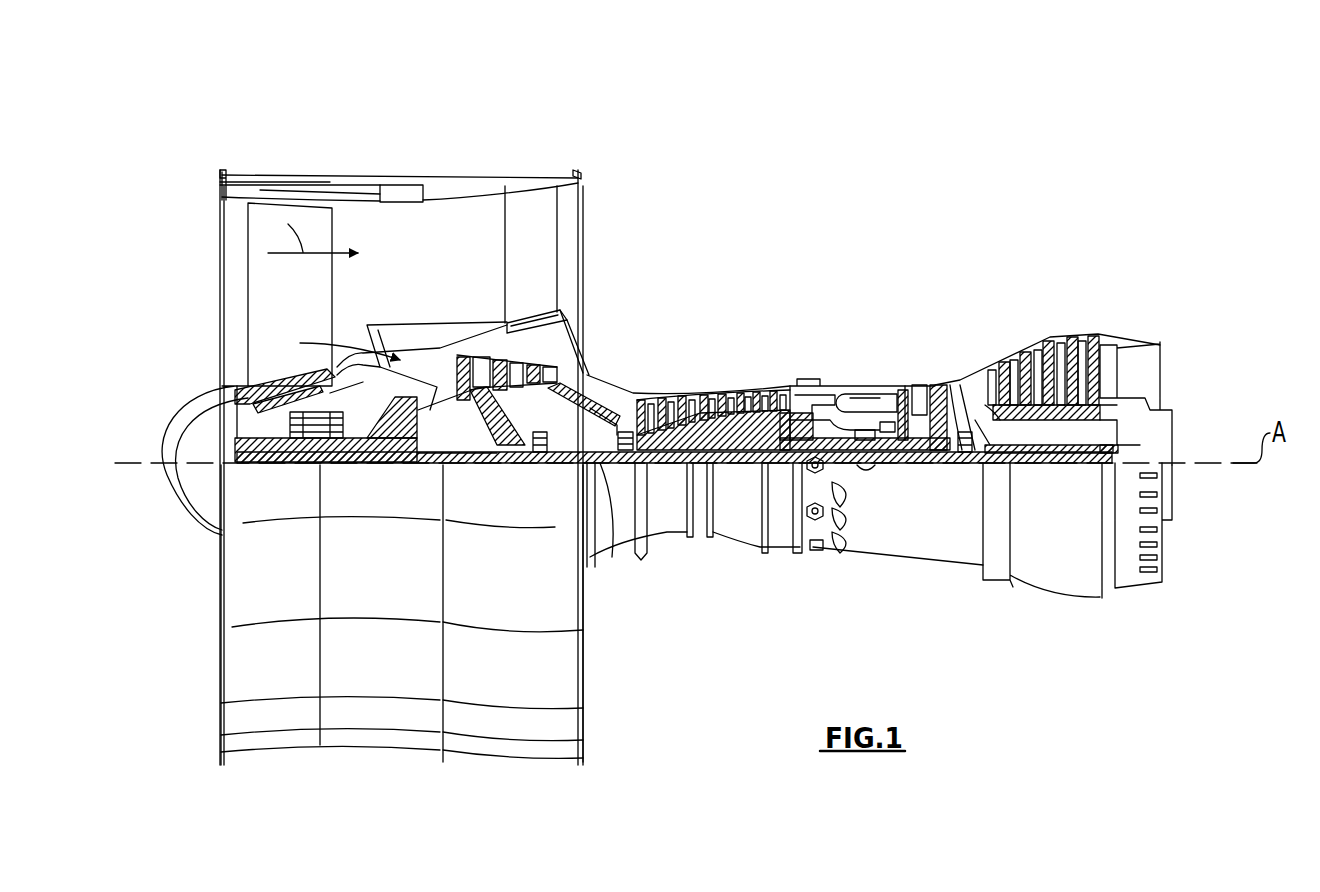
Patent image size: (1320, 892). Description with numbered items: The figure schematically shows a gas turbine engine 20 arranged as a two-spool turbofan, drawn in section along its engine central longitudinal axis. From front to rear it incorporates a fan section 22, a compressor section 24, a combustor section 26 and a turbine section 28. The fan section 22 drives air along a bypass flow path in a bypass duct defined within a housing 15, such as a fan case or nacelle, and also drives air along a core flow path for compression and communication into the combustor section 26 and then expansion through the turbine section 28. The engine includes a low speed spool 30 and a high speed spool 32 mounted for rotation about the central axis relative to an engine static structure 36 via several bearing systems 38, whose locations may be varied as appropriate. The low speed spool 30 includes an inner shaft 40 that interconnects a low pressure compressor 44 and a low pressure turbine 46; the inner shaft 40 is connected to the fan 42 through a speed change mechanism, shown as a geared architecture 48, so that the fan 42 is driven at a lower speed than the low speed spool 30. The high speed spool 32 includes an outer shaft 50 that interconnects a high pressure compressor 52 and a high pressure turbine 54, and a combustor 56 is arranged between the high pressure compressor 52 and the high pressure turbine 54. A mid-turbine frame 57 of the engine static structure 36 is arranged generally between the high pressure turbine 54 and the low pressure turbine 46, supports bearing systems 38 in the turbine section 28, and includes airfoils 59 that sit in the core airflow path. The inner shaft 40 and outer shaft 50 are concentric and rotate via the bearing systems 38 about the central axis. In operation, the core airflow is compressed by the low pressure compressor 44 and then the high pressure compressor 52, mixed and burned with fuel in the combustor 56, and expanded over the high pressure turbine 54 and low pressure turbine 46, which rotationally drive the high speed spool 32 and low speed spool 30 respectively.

The housing 15 is at (403, 180).
The gas turbine engine 20 is at (862, 226).
The fan section 22 is at (332, 170).
The compressor section 24 is at (634, 366).
The combustor section 26 is at (858, 354).
The turbine section 28 is at (1006, 314).
The low speed spool 30 is at (739, 470).
The high speed spool 32 is at (783, 392).
The engine static structure 36 is at (780, 556).
The bearing systems 38 is at (534, 458).
The inner shaft 40 is at (598, 463).
The fan 42 is at (305, 306).
The low pressure compressor 44 is at (500, 373).
The low pressure turbine 46 is at (1047, 338).
The geared architecture 48 is at (408, 446).
The outer shaft 50 is at (863, 458).
The high pressure compressor 52 is at (717, 392).
The high pressure turbine 54 is at (922, 383).
The combustor 56 is at (857, 402).
The mid-turbine frame 57 is at (966, 368).
The airfoils 59 is at (980, 408).